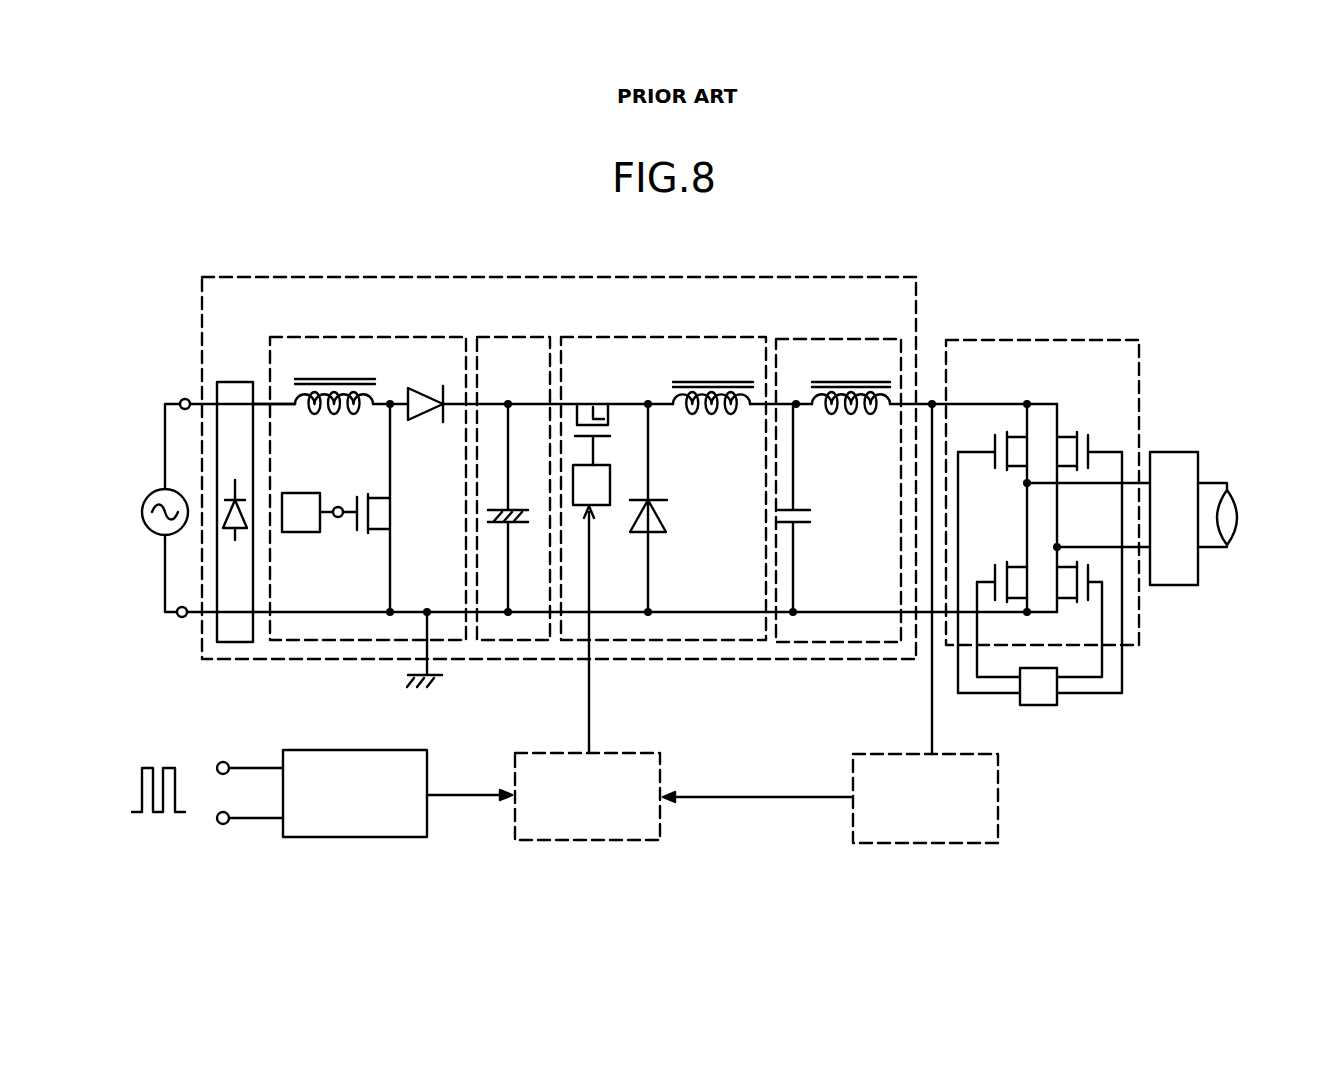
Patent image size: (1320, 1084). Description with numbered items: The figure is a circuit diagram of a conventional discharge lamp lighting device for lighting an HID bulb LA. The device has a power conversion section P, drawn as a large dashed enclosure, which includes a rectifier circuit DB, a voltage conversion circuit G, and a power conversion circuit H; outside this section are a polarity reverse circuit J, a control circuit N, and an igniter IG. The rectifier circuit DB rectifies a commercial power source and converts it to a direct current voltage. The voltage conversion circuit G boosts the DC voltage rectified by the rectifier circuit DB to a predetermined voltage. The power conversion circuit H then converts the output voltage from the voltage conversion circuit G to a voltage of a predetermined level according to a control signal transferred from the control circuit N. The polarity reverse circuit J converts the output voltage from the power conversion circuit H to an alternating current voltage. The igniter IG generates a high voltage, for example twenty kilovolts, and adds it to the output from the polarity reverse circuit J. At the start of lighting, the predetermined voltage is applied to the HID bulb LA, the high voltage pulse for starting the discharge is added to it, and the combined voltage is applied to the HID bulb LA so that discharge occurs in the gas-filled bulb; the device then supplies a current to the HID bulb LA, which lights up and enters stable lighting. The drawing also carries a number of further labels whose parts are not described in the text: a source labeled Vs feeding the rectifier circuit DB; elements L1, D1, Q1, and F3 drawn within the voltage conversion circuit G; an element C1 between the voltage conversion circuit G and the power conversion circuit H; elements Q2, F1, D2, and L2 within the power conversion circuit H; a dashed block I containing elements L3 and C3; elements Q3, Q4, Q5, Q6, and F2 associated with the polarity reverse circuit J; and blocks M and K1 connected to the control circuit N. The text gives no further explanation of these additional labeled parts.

The power conversion section P is at (668, 276).
The AC power source Vs is at (150, 508).
The rectifier circuit DB is at (256, 497).
The voltage conversion circuit G is at (413, 336).
The inductor L1 is at (335, 383).
The diode D1 is at (425, 391).
The switching element Q1 is at (384, 508).
The control circuit F3 is at (304, 493).
The smoothing capacitor C1 is at (513, 488).
The power conversion circuit H is at (718, 336).
The switching element Q2 is at (592, 421).
The drive circuit F1 is at (604, 507).
The diode D2 is at (664, 508).
The inductor L2 is at (713, 385).
The filter circuit I is at (866, 338).
The inductor L3 is at (851, 386).
The capacitor C3 is at (810, 508).
The polarity reverse circuit J is at (1088, 338).
The switching element Q3 is at (992, 508).
The switching element Q4 is at (1002, 570).
The switching element Q5 is at (1089, 508).
The switching element Q6 is at (1079, 596).
The inverter drive circuit F2 is at (1040, 707).
The igniter IG is at (1182, 451).
The HID bulb LA is at (1238, 518).
The dimmer signal input circuit M is at (390, 839).
The control circuit N is at (618, 842).
The detection circuit K1 is at (945, 845).